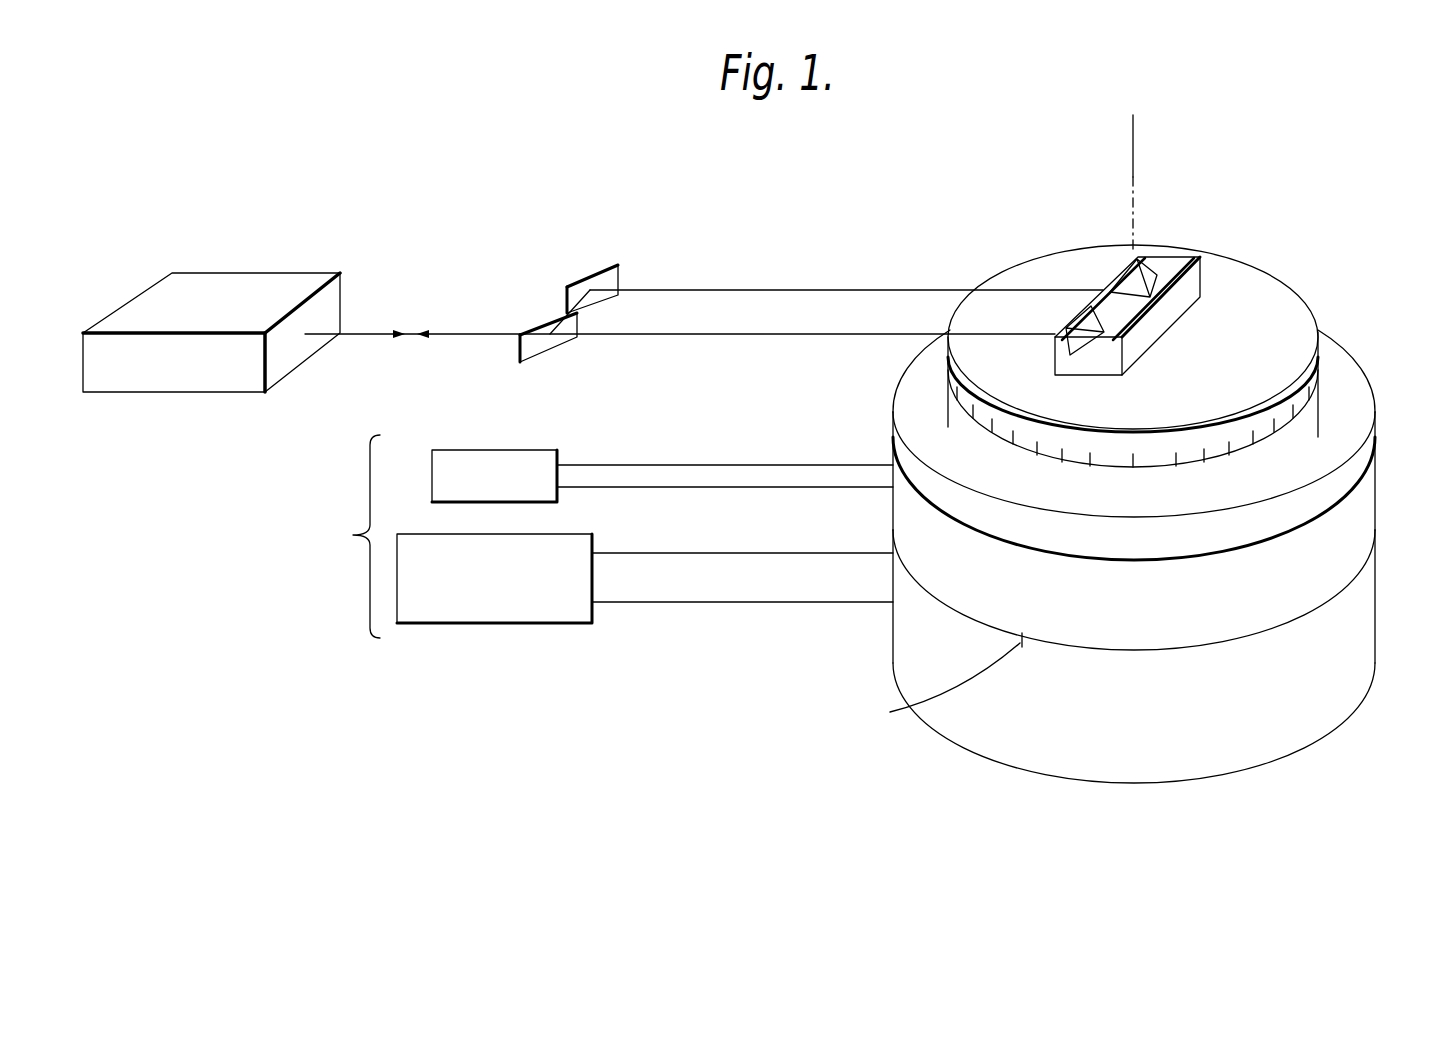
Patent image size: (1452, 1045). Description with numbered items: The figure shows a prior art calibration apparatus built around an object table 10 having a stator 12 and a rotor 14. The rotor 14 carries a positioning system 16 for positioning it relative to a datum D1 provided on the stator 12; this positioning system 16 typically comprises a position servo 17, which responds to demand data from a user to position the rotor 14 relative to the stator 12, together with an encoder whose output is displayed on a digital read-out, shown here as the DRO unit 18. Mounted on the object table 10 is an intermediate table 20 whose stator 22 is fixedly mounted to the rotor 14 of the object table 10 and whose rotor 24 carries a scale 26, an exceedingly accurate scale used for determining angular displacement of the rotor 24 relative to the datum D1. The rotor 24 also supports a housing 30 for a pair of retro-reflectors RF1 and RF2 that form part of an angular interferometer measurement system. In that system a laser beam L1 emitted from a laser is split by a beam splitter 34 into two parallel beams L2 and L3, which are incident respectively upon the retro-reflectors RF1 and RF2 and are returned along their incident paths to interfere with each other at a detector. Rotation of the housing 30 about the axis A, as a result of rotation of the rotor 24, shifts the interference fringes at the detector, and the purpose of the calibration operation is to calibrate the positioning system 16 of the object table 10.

The object table 10 is at (1386, 616).
The stator 12 is at (1298, 722).
The rotor 14 is at (1355, 527).
The positioning system 16 is at (607, 537).
The position servo 17 is at (450, 450).
The digital readout (DRO) 18 is at (437, 608).
The intermediate table 20 is at (1250, 292).
The stator 22 is at (1307, 423).
The rotor 24 is at (1107, 378).
The scale 26 is at (993, 430).
The housing 30 is at (1094, 281).
The beam splitter 34 is at (549, 281).
The axis A is at (1135, 150).
The datum D1 is at (939, 681).
The laser beam L1 is at (372, 332).
The parallel beam L2 is at (706, 290).
The parallel beam L3 is at (683, 340).
The retro-reflector RF1 is at (1130, 268).
The retro-reflector RF2 is at (1077, 317).